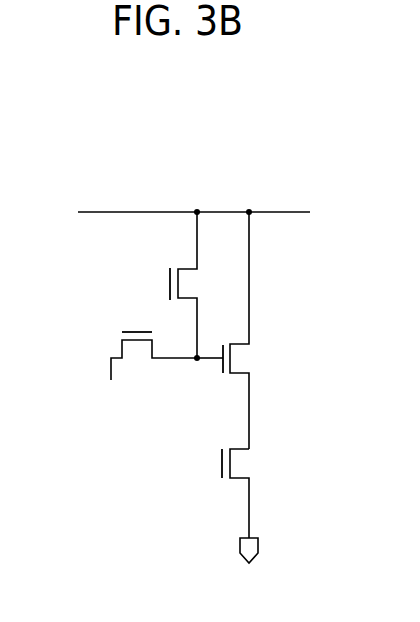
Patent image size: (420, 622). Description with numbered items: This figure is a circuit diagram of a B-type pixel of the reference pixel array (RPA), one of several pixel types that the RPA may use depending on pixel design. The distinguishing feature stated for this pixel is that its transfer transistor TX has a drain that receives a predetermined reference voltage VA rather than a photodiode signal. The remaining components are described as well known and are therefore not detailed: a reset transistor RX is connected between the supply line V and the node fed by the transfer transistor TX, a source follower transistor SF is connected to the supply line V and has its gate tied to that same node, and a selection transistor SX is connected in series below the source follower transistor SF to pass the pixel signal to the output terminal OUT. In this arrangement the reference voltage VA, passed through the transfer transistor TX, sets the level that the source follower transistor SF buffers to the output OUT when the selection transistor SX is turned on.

The supply voltage line V is at (194, 198).
The reset transistor / reset signal RX is at (170, 286).
The transfer transistor / transfer signal TX is at (122, 342).
The reference voltage VA is at (109, 400).
The source follower transistor SF is at (223, 330).
The selection transistor / selection signal SX is at (222, 464).
The output terminal OUT is at (249, 566).